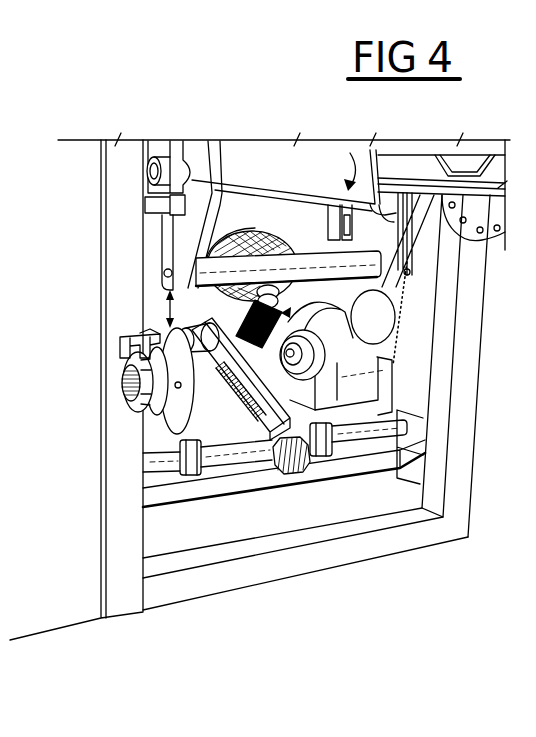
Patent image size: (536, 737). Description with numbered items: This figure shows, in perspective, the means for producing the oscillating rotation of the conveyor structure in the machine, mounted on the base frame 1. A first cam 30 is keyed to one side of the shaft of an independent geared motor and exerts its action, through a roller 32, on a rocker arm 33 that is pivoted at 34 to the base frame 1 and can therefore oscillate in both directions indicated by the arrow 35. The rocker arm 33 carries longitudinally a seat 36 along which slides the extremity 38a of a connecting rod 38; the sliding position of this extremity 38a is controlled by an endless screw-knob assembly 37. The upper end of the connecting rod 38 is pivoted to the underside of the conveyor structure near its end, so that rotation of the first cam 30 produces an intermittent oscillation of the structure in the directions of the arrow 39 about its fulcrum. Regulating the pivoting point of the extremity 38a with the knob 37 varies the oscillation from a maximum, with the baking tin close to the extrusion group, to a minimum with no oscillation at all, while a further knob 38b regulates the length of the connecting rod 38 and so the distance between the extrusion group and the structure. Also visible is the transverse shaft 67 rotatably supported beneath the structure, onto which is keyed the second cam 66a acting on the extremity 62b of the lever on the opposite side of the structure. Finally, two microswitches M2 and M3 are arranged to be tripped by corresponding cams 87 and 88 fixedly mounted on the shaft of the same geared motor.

The base frame 1 is at (427, 537).
The first cam 30 is at (180, 423).
The roller 32 is at (130, 373).
The rocker arm 33 is at (263, 432).
The pivot 34 is at (370, 436).
The arrow 35 is at (171, 292).
The seat 36 is at (240, 410).
The endless screw-knob assembly 37 is at (232, 392).
The connecting rod 38 is at (286, 314).
The extremity of the connecting rod 38a is at (205, 268).
The knob 38b is at (277, 205).
The arrow 39 is at (348, 167).
The extremity of the lever 62b is at (160, 202).
The second cam 66a is at (173, 150).
The transverse shaft 67 is at (215, 141).
The cam 87 is at (155, 412).
The cam 88 is at (138, 403).
The microswitch M2 is at (158, 330).
The microswitch M3 is at (128, 337).